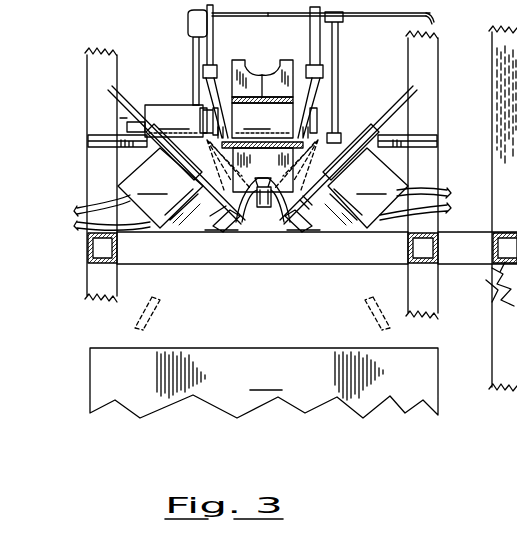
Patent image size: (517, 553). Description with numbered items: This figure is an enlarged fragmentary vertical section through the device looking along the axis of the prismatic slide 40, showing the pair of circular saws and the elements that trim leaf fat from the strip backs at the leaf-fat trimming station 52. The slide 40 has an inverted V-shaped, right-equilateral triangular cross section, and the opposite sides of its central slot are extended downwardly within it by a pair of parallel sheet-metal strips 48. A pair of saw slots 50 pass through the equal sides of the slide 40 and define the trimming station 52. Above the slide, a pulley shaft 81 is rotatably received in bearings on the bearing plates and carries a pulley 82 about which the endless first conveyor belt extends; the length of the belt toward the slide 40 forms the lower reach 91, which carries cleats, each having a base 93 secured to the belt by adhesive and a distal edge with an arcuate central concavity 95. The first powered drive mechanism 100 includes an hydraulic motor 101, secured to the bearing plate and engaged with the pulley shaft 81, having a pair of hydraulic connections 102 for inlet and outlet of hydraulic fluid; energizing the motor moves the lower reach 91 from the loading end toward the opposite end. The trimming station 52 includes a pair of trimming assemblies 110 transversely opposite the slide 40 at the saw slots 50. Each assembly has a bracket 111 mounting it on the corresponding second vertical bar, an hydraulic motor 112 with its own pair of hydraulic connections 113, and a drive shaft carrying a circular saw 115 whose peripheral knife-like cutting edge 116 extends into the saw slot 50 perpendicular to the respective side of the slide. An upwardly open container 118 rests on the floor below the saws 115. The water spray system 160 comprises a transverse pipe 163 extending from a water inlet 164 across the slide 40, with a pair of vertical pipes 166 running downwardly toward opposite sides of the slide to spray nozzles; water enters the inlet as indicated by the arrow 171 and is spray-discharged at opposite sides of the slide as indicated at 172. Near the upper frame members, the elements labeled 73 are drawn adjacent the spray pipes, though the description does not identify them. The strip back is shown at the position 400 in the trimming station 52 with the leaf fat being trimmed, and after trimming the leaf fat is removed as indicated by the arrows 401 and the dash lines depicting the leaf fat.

The prismatic slide 40 is at (256, 228).
The strips 48 is at (273, 207).
The saw slots 50 is at (242, 228).
The leaf-fat trimming station 52 is at (76, 259).
The supply pipe 73 is at (208, 32).
The pulley shaft 81 is at (333, 100).
The pulley 82 is at (262, 120).
The lower reach 91 is at (309, 198).
The base 93 is at (268, 92).
The arcuate central concavity 95 is at (258, 75).
The first powered drive mechanism 100 is at (176, 88).
The hydraulic motor 101 is at (231, 147).
The hydraulic connections 102 is at (120, 118).
The trimming assemblies 110 is at (96, 180).
The bracket 111 is at (108, 150).
The hydraulic motor 112 is at (263, 188).
The hydraulic connections 113 is at (75, 211).
The circular saw 115 is at (398, 116).
The cutting edge 116 is at (118, 90).
The container 118 is at (264, 383).
The water spray system 160 is at (390, 25).
The transverse pipe 163 is at (276, 16).
The water inlet 164 is at (430, 20).
The vertical pipes 166 is at (191, 53).
The arrow indicating water entry 171 is at (440, 17).
The spray discharge 172 is at (335, 140).
The strip back position 400 is at (214, 216).
The arrows indicating leaf fat removal 401 is at (218, 212).